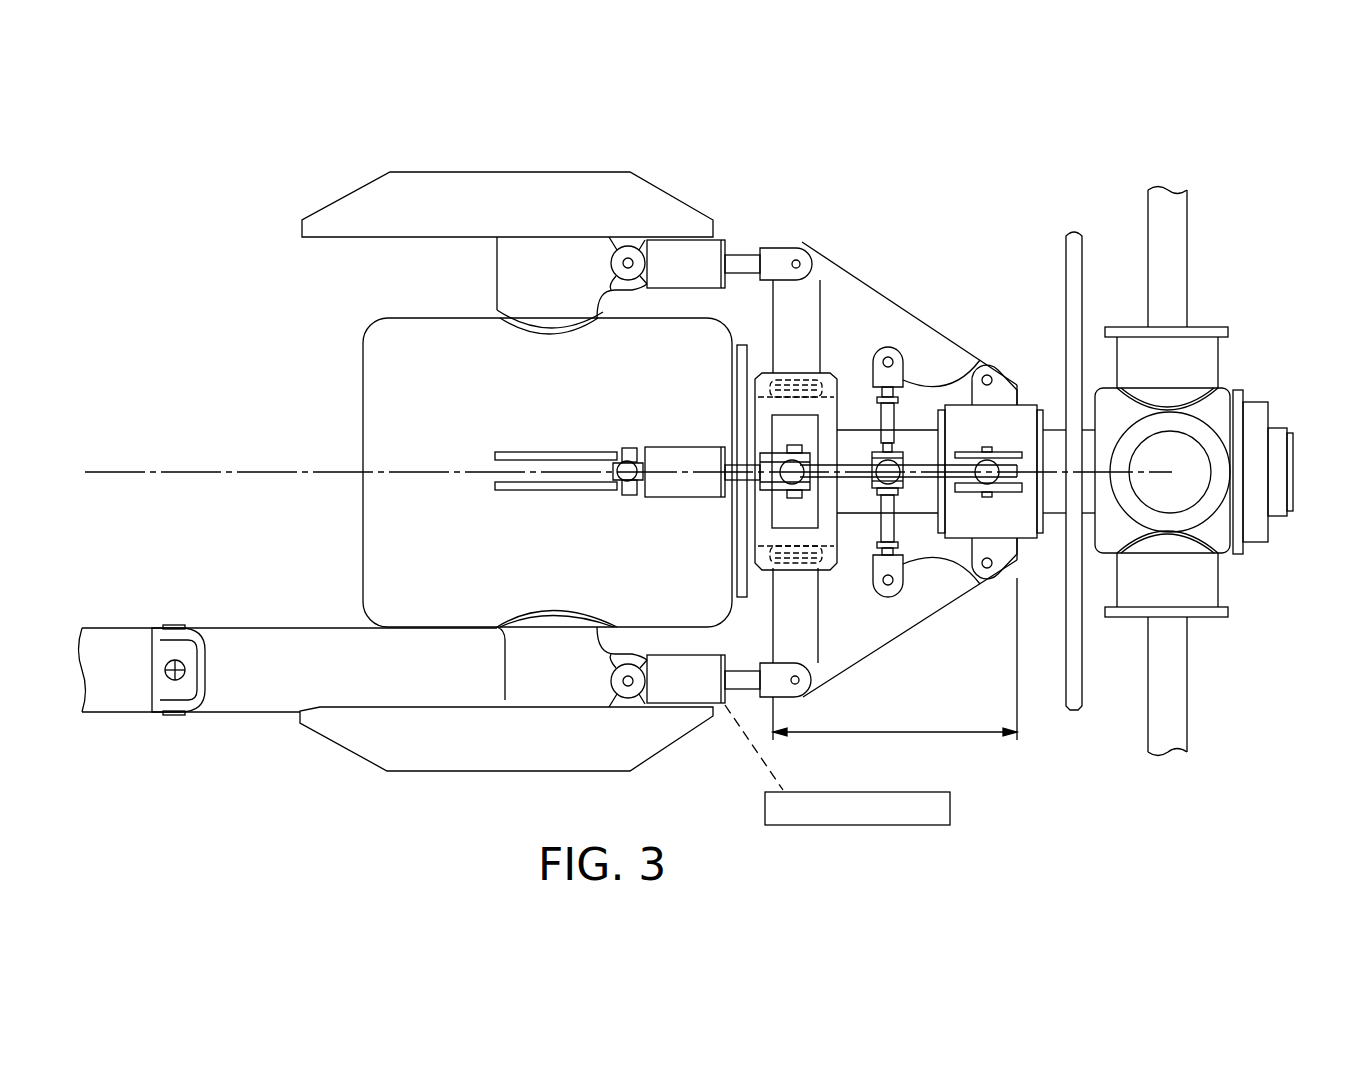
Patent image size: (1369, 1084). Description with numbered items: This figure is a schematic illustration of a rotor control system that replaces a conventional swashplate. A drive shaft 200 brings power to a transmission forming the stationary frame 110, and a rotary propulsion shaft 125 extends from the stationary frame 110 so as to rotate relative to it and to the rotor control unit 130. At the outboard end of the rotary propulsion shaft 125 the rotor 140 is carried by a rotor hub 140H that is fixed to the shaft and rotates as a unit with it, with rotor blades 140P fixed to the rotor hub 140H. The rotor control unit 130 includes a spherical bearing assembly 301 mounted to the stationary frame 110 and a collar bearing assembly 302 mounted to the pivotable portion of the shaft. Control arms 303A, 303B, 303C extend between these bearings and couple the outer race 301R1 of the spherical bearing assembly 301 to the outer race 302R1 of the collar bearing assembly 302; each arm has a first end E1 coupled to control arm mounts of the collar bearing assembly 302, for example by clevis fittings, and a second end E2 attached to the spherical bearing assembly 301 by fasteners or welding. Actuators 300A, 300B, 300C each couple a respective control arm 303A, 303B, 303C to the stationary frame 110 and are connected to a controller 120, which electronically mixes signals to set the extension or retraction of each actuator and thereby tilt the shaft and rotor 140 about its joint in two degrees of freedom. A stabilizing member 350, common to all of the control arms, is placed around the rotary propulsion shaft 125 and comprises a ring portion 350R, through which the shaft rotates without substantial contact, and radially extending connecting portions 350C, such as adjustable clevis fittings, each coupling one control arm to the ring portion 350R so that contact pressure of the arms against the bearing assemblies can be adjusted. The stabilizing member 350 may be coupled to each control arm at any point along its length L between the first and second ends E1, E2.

The stationary frame 110 is at (483, 185).
The controller 120 is at (895, 825).
The rotary propulsion shaft 125 is at (1072, 232).
The rotor control unit 130 is at (983, 752).
The rotor 140 is at (1223, 630).
The rotor blade 140P is at (1187, 232).
The rotor hub 140H is at (1198, 360).
The drive shaft 200 is at (253, 685).
The actuator 300A is at (688, 257).
The actuator 300B is at (672, 453).
The actuator 300C is at (680, 688).
The spherical bearing assembly 301 is at (817, 345).
The outer race of the spherical bearing assembly 301R1 is at (802, 380).
The collar bearing assembly 302 is at (1020, 537).
The outer race of the collar bearing assembly 302R1 is at (1030, 403).
The control arm 303A is at (915, 335).
The control arm 303B is at (924, 478).
The control arm 303C is at (862, 668).
The stabilizing member 350 is at (915, 490).
The connecting portion 350C is at (893, 355).
The ring portion 350R is at (902, 415).
The first end E1 is at (1000, 352).
The second end E2 is at (765, 297).
The length L is at (893, 735).